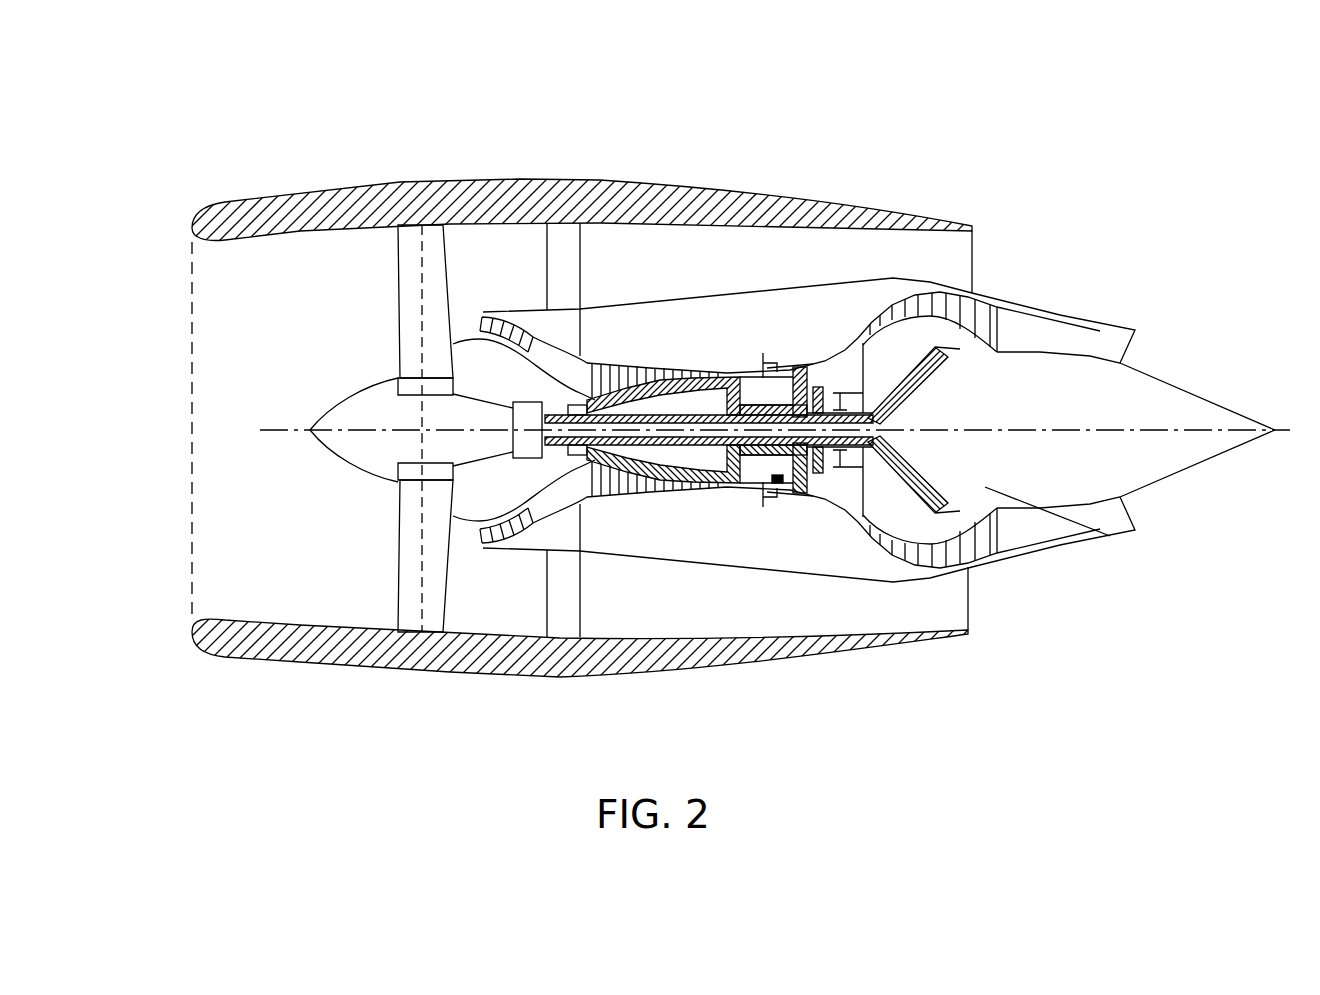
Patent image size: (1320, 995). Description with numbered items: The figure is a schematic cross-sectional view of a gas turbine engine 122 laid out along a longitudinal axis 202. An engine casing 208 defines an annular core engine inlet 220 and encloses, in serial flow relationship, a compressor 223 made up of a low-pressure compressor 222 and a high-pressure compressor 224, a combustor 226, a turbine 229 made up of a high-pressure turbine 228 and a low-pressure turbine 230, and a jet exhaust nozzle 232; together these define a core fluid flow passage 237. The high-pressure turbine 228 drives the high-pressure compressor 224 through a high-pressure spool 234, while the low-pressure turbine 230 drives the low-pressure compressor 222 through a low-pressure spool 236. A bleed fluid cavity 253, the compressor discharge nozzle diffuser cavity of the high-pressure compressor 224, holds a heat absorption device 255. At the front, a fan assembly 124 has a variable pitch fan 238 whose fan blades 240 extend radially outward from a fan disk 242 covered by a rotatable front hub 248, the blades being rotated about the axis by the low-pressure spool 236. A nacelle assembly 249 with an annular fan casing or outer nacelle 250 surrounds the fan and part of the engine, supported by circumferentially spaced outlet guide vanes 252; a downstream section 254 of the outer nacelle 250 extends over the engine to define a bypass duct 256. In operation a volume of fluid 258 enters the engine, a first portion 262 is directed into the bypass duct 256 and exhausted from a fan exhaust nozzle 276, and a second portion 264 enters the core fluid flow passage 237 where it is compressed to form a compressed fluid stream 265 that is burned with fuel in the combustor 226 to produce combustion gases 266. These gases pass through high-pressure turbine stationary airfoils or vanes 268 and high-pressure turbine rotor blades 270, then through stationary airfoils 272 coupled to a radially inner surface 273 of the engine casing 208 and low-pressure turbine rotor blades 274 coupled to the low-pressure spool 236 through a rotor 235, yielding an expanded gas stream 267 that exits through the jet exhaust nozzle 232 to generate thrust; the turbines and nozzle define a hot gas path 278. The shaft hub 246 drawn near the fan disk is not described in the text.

The gas turbine engine 122 is at (1160, 97).
The fan assembly 124 is at (347, 245).
The longitudinal axis 202 is at (1057, 427).
The engine casing 208 is at (693, 445).
The annular core engine inlet 220 is at (476, 537).
The low-pressure compressor 222 is at (542, 506).
The compressor 223 is at (655, 547).
The high-pressure compressor 224 is at (623, 492).
The combustor 226 is at (775, 498).
The high-pressure turbine 228 is at (845, 500).
The turbine 229 is at (1110, 536).
The low-pressure turbine 230 is at (1152, 620).
The jet exhaust nozzle 232 is at (1167, 512).
The high-pressure spool 234 is at (760, 403).
The rotor 235 is at (953, 357).
The low-pressure spool 236 is at (863, 412).
The core fluid flow passage 237 is at (566, 507).
The variable pitch fan 238 is at (385, 492).
The fan blades 240 is at (397, 613).
The fan disk 242 is at (400, 388).
The gearbox hub 246 is at (525, 407).
The rotatable front hub 248 is at (333, 450).
The nacelle assembly 249 is at (927, 653).
The outer nacelle 250 is at (288, 667).
The outlet guide vanes 252 is at (583, 258).
The bleed fluid cavity 253 is at (757, 480).
The downstream section 254 is at (850, 202).
The heat absorption device 255 is at (790, 478).
The bypass duct 256 is at (795, 263).
The volume of fluid 258 is at (262, 350).
The first portion 262 is at (467, 253).
The second portion 264 is at (535, 348).
The compressed fluid stream 265 is at (567, 372).
The combustion gases 266 is at (947, 318).
The expanded gas stream 267 is at (1167, 348).
The high-pressure turbine stationary airfoils or vanes 268 is at (797, 492).
The high-pressure turbine rotor blades 270 is at (873, 468).
The stationary airfoils 272 is at (880, 537).
The radially inner surface 273 is at (913, 313).
The low-pressure turbine rotor blades 274 is at (900, 543).
The fan exhaust nozzle 276 is at (972, 240).
The hot gas path 278 is at (853, 333).